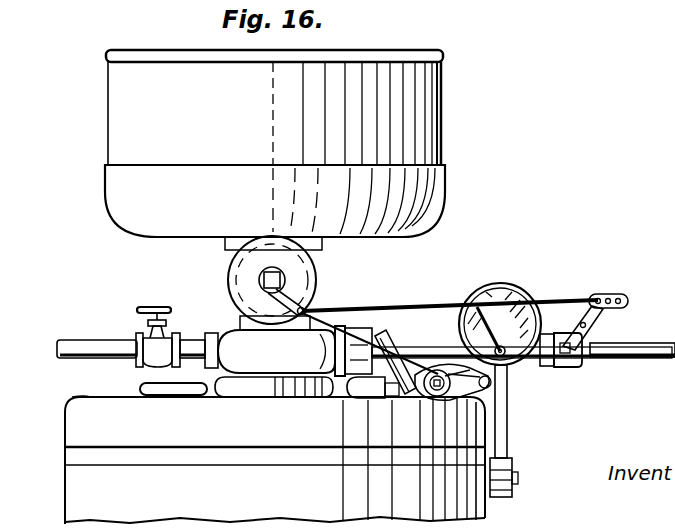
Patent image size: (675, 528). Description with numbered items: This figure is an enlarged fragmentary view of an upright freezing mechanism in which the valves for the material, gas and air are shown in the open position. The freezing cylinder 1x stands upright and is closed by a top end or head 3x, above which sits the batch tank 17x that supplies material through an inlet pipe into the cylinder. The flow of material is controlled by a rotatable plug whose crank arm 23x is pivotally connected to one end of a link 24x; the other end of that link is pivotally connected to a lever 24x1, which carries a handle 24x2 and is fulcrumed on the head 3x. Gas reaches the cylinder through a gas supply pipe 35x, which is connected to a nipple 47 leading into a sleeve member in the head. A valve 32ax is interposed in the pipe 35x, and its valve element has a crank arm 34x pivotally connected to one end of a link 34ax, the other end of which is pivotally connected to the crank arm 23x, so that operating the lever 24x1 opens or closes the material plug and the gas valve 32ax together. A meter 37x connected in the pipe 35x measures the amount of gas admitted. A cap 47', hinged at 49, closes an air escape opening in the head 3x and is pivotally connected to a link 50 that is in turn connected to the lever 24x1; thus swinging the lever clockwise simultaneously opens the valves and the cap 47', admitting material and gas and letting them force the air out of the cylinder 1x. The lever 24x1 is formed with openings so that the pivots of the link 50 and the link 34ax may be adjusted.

The batch tank 17x is at (442, 101).
The crank arm 23x is at (308, 291).
The link 24x is at (354, 300).
The link 34ax is at (417, 307).
The meter 37x is at (497, 285).
The crank arm 34x is at (597, 315).
The gas supply pipe 35x is at (658, 350).
The valve 32ax is at (565, 367).
The nipple 47 is at (293, 361).
The cap 47' is at (395, 358).
The link 50 is at (432, 350).
The hinge 49 is at (430, 398).
The handle 24x2 is at (353, 399).
The lever 24x1 is at (443, 403).
The top end or head 3x is at (78, 397).
The freezing cylinder 1x is at (80, 503).